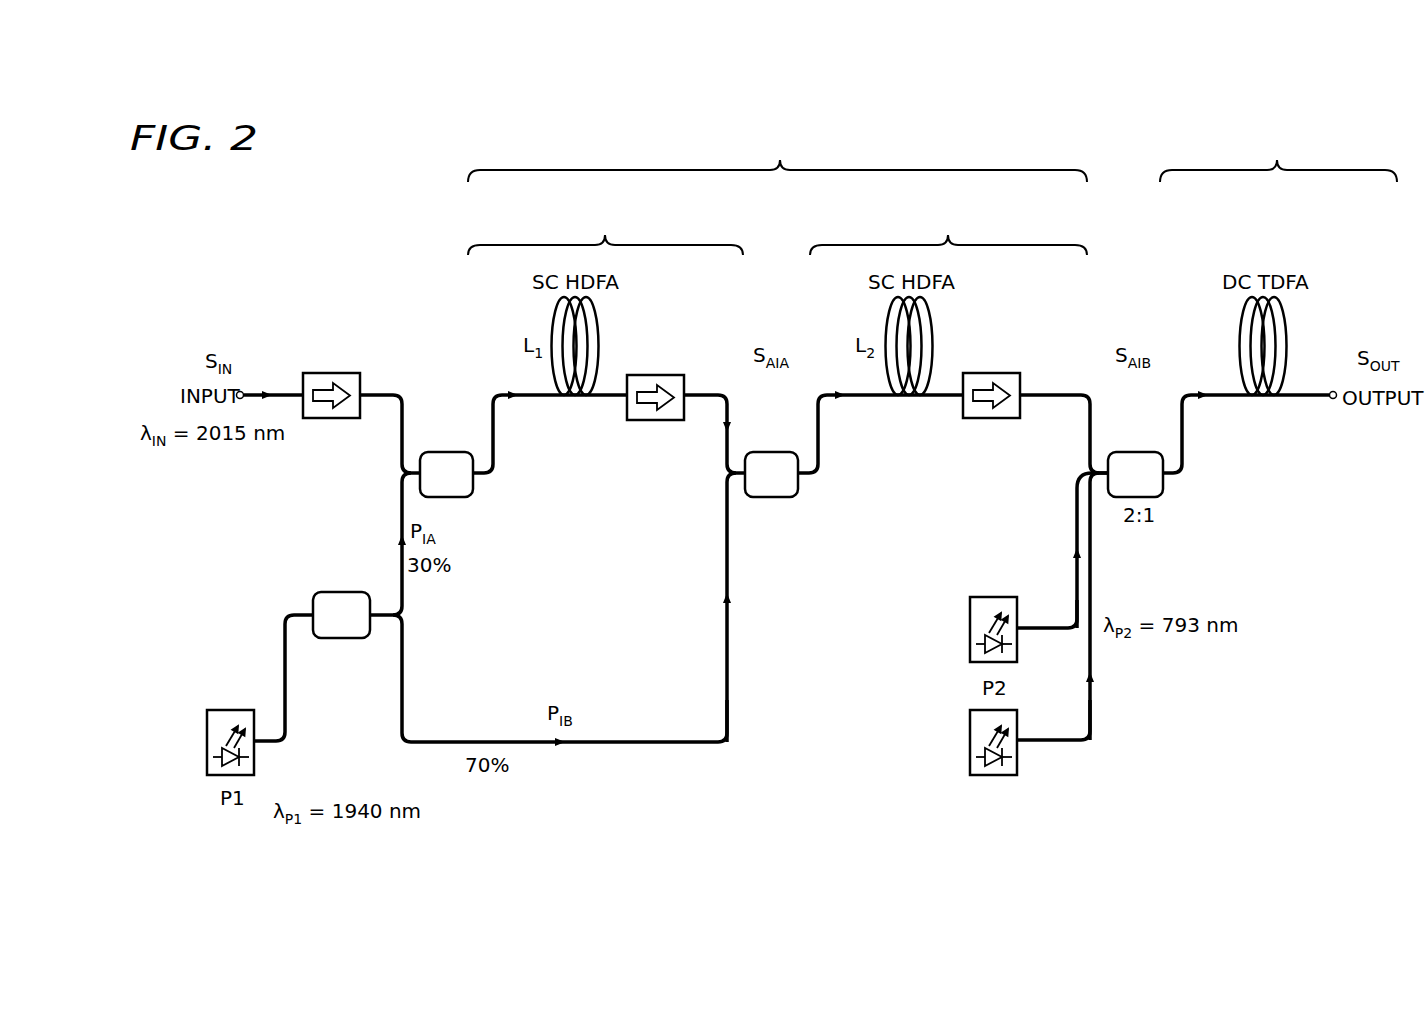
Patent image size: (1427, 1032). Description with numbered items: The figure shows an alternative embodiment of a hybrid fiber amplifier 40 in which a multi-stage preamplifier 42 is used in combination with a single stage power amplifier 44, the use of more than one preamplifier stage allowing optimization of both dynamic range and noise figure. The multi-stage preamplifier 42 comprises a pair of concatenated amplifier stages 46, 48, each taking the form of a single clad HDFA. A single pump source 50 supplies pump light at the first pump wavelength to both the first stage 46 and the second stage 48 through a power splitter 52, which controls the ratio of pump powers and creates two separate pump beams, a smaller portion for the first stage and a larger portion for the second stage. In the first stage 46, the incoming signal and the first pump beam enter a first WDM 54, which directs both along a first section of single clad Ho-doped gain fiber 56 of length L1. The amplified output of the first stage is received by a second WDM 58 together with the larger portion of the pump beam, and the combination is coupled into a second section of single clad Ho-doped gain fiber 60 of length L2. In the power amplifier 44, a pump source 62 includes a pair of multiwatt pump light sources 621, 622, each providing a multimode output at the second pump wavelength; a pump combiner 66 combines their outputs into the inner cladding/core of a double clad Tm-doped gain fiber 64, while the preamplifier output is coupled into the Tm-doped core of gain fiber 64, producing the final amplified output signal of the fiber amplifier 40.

The hybrid fiber amplifier 40 is at (244, 216).
The multi-stage preamplifier 42 is at (792, 152).
The single stage power amplifier 44 is at (1291, 152).
The first amplifier stage 46 is at (605, 229).
The second amplifier stage 48 is at (948, 229).
The pump source 50 is at (205, 741).
The power splitter 52 is at (343, 590).
The first WDM 54 is at (448, 452).
The first section of single clad Ho-doped gain fiber 56 is at (598, 322).
The second WDM 58 is at (772, 452).
The second section of single clad Ho-doped gain fiber 60 is at (934, 322).
The pump source 62 is at (966, 693).
The multiwatt pump light source 621 is at (992, 597).
The multiwatt pump light source 622 is at (993, 773).
The double clad Tm-doped gain fiber 64 is at (1286, 322).
The pump combiner 66 is at (1136, 452).